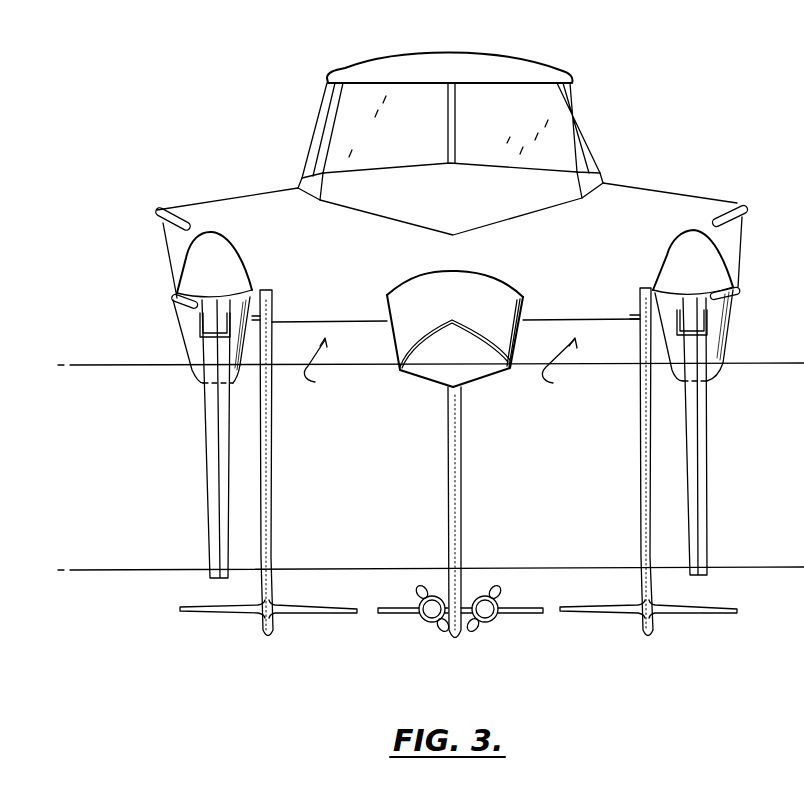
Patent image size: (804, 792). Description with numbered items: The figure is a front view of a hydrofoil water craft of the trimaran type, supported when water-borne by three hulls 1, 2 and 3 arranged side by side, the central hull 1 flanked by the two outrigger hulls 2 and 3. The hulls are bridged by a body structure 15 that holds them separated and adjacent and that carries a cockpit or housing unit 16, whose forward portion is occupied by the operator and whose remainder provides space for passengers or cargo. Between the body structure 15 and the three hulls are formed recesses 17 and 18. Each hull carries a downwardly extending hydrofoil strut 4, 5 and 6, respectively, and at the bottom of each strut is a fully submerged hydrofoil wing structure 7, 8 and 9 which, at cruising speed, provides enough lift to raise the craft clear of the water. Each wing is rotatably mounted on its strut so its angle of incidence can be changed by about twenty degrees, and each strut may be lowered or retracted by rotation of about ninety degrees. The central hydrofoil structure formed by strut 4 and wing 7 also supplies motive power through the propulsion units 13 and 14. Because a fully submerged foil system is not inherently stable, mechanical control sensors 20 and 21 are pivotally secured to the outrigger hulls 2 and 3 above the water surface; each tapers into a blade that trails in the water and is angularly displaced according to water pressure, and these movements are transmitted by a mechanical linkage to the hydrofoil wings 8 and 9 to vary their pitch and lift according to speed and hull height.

The hull 1 is at (490, 325).
The outrigger hull 2 is at (188, 327).
The outrigger hull 3 is at (727, 338).
The hydrofoil strut 4 is at (460, 522).
The hydrofoil strut 5 is at (270, 508).
The hydrofoil strut 6 is at (647, 508).
The hydrofoil wing structure 7 is at (402, 616).
The hydrofoil wing structure 8 is at (249, 620).
The hydrofoil wing structure 9 is at (677, 616).
The propulsion unit 13 is at (432, 612).
The propulsion unit 14 is at (486, 612).
The body structure 15 is at (253, 207).
The cockpit or housing unit 16 is at (517, 62).
The recess 17 is at (323, 365).
The recess 18 is at (559, 365).
The mechanical control sensor 20 is at (217, 493).
The mechanical control sensor 21 is at (698, 517).